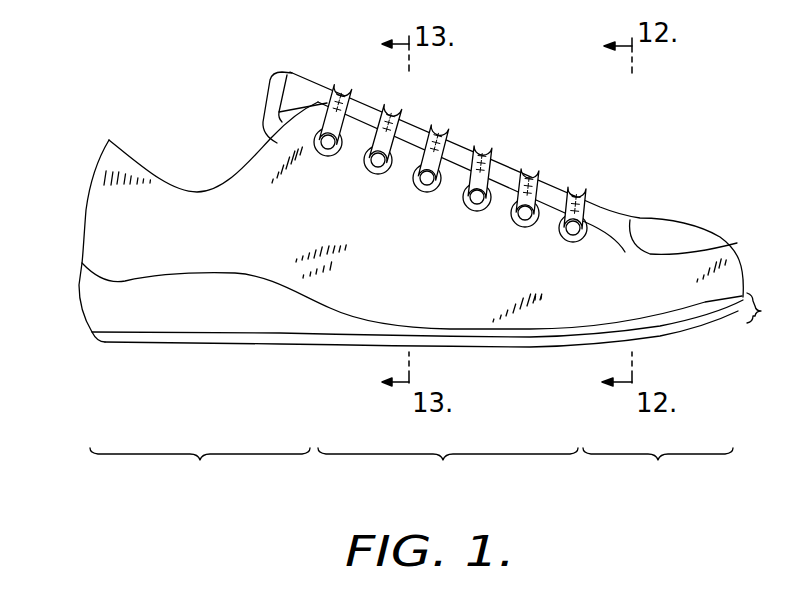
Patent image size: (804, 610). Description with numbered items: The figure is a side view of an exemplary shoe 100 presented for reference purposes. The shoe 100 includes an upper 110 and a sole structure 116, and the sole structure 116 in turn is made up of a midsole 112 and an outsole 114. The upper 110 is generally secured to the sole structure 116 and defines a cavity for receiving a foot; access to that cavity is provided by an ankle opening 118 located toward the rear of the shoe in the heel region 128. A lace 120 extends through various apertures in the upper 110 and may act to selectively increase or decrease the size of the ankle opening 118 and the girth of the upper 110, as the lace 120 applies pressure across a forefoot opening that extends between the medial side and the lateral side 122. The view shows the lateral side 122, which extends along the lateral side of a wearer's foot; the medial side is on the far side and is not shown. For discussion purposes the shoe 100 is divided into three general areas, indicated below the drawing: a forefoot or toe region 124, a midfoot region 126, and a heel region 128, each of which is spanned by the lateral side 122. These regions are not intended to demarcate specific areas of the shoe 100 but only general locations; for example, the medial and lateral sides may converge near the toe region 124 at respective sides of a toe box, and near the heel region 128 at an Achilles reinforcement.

The shoe 100 is at (173, 66).
The upper 110 is at (664, 217).
The midsole 112 is at (96, 301).
The outsole 114 is at (647, 332).
The sole structure 116 is at (775, 327).
The ankle opening 118 is at (202, 142).
The lace 120 is at (441, 132).
The lateral side 122 is at (468, 266).
The toe region 124 is at (658, 477).
The midfoot region 126 is at (448, 477).
The heel region 128 is at (200, 477).